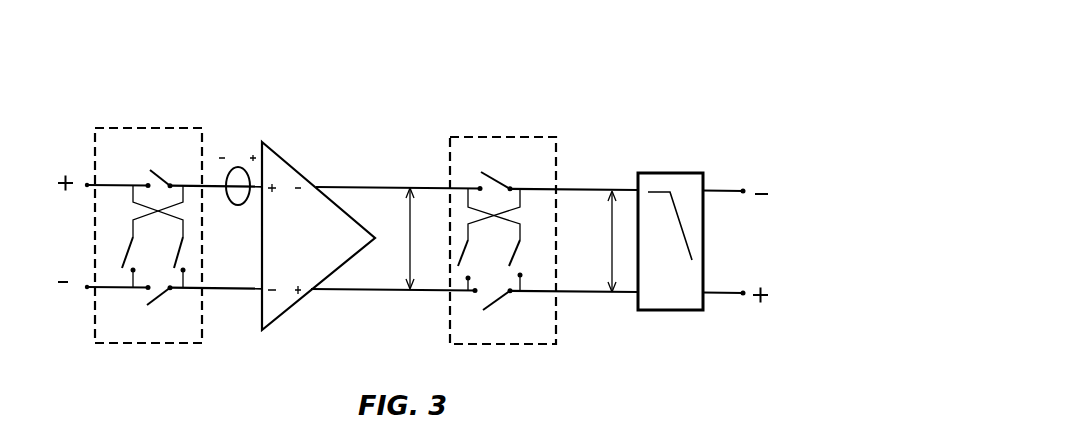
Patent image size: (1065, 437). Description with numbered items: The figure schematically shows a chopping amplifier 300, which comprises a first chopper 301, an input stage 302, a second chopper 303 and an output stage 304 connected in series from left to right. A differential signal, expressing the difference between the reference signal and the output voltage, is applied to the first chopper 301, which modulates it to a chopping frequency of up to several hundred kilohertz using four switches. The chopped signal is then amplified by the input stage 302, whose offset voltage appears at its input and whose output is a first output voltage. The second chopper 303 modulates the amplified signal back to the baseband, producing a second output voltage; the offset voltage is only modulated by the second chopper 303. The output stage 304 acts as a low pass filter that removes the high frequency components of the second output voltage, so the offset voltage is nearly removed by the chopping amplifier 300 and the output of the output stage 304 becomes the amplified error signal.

The chopping amplifier 300 is at (658, 97).
The first chopper 301 is at (132, 128).
The input stage 302 is at (296, 170).
The second chopper 303 is at (480, 136).
The output stage 304 is at (662, 173).